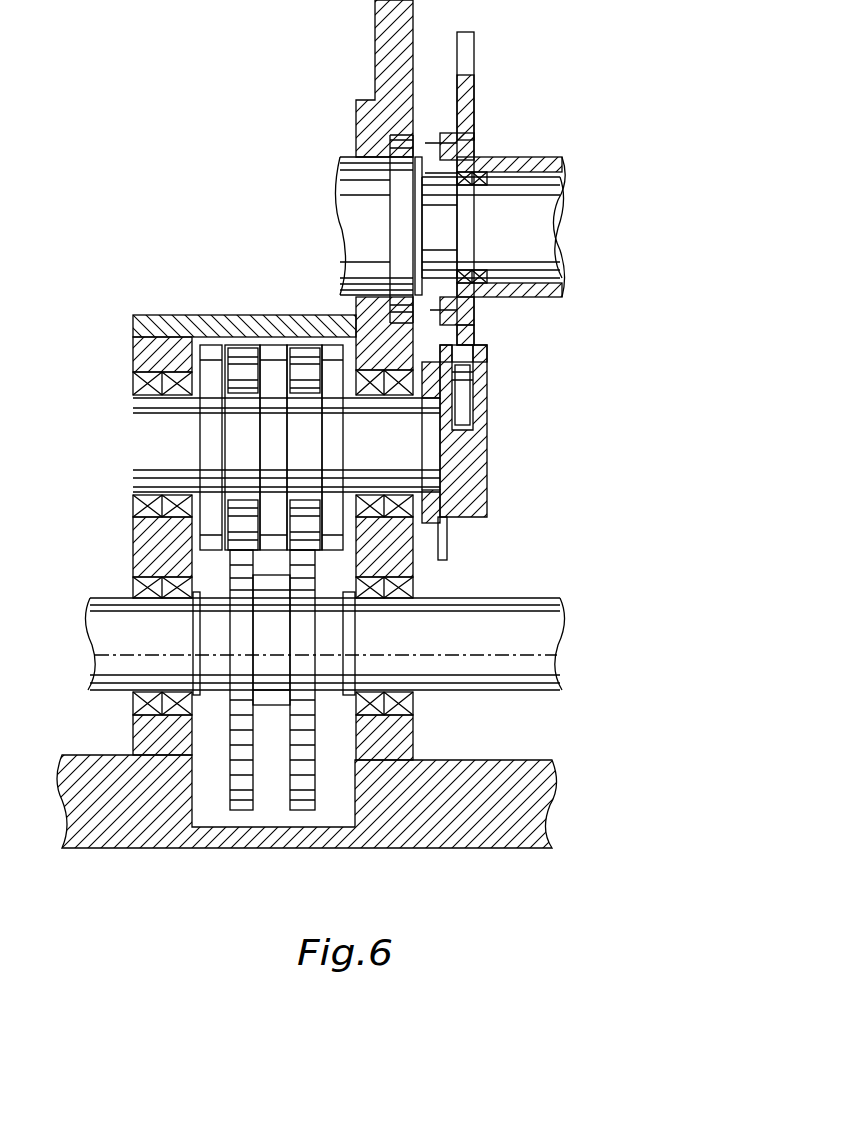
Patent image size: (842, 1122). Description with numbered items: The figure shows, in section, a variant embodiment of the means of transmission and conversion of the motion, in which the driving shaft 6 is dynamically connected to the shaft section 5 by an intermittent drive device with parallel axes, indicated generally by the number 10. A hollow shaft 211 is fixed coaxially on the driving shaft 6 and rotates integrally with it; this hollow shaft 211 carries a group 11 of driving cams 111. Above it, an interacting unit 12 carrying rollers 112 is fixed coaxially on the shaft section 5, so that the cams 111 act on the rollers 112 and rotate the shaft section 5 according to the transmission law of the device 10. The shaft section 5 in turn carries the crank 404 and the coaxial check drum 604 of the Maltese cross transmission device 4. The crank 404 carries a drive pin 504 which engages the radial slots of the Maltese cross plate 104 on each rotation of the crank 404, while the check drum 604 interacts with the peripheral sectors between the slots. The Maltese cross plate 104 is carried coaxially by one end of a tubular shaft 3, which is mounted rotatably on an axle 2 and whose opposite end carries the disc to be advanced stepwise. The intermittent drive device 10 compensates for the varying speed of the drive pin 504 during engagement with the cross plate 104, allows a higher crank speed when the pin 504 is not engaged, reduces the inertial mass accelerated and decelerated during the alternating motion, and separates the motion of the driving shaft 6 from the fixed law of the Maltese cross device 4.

The intermittent drive device 10 is at (219, 300).
The rollers 112 is at (297, 346).
The interacting unit 12 is at (188, 434).
The shaft section 5 is at (150, 470).
The axle 2 is at (505, 197).
The tubular shaft 3 is at (548, 157).
The Maltese cross plate 104 is at (473, 330).
The drive pin 504 is at (485, 375).
The crank 404 is at (487, 413).
The Maltese cross transmission device 4 is at (502, 463).
The check drum 604 is at (465, 525).
The hollow shaft 211 is at (330, 642).
The driving shaft 6 is at (478, 682).
The group of driving cams 11 is at (224, 790).
The driving cams 111 is at (290, 800).